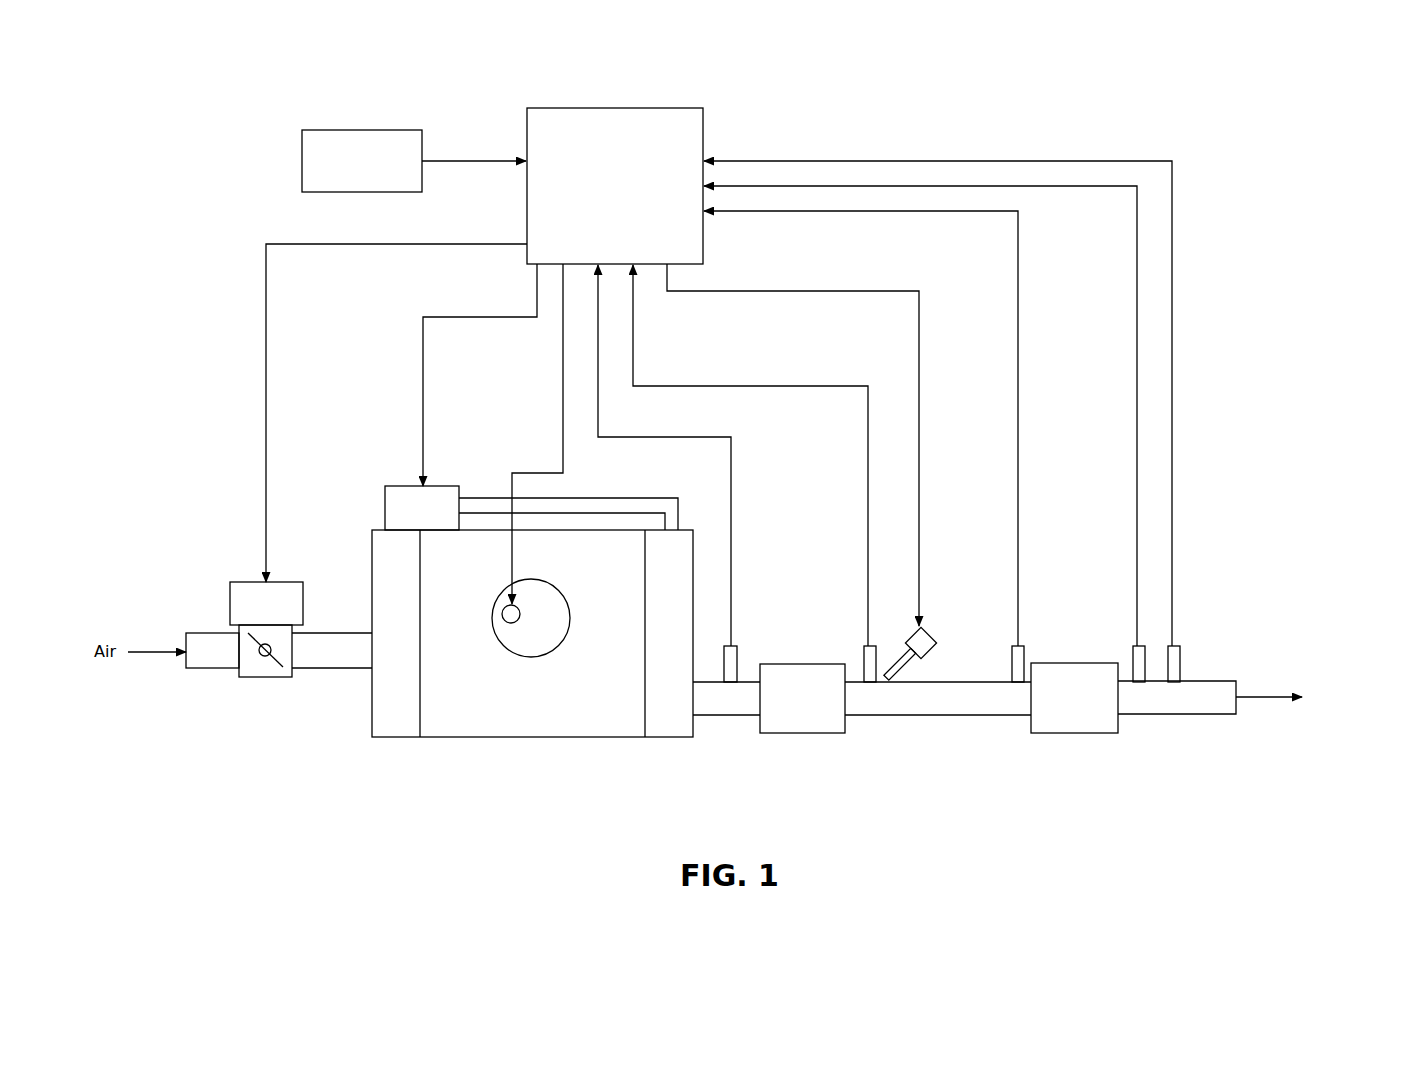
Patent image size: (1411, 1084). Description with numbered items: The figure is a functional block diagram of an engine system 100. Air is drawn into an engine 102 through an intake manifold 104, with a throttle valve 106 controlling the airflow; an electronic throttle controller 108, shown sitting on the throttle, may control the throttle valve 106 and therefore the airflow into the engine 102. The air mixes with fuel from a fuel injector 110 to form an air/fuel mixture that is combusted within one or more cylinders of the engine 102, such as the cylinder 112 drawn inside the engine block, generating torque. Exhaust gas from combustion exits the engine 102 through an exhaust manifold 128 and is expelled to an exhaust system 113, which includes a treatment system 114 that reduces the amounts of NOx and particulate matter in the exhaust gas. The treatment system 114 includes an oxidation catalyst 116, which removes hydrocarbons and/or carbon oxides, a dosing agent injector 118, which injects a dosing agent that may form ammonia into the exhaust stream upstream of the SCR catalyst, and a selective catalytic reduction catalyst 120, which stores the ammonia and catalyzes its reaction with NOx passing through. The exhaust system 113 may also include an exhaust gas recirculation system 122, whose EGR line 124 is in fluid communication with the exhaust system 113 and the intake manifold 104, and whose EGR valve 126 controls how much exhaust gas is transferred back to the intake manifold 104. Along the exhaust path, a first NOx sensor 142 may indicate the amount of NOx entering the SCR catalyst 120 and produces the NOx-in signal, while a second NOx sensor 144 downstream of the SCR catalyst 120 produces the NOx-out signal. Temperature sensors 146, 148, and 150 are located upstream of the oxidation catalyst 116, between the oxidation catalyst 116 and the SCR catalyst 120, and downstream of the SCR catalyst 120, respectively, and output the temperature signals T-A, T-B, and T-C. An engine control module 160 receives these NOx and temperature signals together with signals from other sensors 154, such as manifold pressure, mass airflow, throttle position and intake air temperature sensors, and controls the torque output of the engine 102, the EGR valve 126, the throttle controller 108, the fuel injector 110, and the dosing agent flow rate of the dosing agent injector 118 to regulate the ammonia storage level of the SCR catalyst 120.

The engine system 100 is at (298, 70).
The engine 102 is at (477, 738).
The intake manifold 104 is at (370, 729).
The throttle valve 106 is at (265, 677).
The electronic throttle controller 108 is at (248, 582).
The fuel injector 110 is at (501, 609).
The cylinder 112 is at (532, 658).
The exhaust system 113 is at (1232, 568).
The treatment system 114 is at (1096, 824).
The oxidation catalyst 116 is at (802, 733).
The dosing agent injector 118 is at (933, 632).
The selective catalytic reduction catalyst 120 is at (1077, 733).
The exhaust gas recirculation system 122 is at (527, 452).
The EGR line 124 is at (565, 498).
The EGR valve 126 is at (397, 486).
The exhaust manifold 128 is at (668, 738).
The first NOx sensor 142 is at (865, 646).
The second NOx sensor 144 is at (1133, 646).
The temperature sensor 146 is at (733, 646).
The temperature sensor 148 is at (1023, 646).
The temperature sensor 150 is at (1182, 646).
The other sensors 154 is at (362, 130).
The engine control module 160 is at (615, 108).